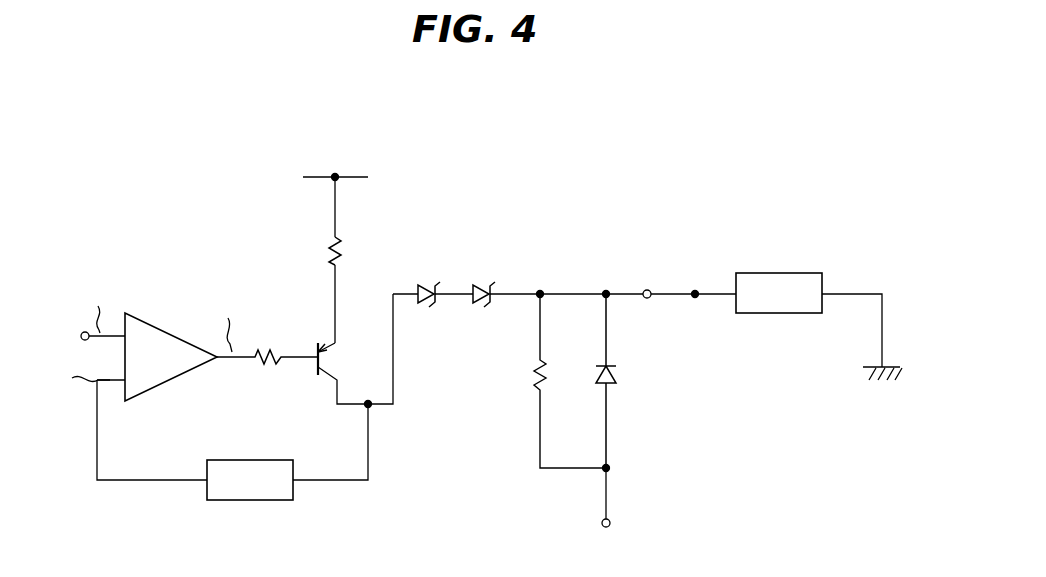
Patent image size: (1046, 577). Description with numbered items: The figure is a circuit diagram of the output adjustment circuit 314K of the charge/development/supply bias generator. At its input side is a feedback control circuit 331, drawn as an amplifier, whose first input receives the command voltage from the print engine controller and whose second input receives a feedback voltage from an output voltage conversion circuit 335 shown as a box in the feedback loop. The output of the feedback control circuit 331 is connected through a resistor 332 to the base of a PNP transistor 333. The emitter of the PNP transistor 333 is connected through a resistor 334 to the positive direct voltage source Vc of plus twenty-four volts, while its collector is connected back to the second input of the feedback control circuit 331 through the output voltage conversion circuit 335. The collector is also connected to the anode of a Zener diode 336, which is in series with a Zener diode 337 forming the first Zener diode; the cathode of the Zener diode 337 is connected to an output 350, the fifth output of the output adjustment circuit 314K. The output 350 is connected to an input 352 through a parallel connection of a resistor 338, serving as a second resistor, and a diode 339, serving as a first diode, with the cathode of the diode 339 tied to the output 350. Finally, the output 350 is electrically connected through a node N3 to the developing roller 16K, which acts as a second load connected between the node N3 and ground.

The output adjustment circuit 314K is at (541, 157).
The feedback control circuit 331 is at (178, 331).
The resistor 332 is at (279, 352).
The PNP transistor 333 is at (326, 378).
The resistor 334 is at (331, 240).
The output voltage conversion circuit 335 is at (250, 504).
The Zener diode 336 is at (437, 284).
The Zener diode 337 is at (492, 284).
The resistor 338 is at (535, 373).
The diode 339 is at (617, 377).
The output 350 is at (647, 289).
The input 352 is at (611, 523).
The node N3 is at (695, 290).
The developing roller 16K is at (778, 273).